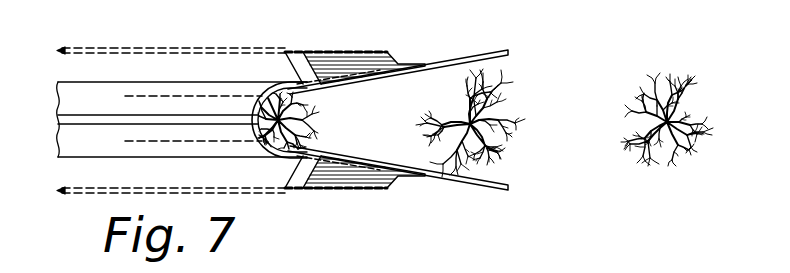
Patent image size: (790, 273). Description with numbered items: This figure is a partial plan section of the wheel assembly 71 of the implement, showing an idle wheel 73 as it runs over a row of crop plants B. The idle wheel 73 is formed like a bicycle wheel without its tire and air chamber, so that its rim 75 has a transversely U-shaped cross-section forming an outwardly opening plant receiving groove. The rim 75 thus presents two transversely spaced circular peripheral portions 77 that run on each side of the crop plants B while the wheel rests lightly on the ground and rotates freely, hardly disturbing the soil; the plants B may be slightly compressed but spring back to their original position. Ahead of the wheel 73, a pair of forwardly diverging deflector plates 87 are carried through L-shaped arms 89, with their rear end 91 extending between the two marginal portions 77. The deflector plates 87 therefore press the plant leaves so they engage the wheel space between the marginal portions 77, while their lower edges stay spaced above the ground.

The grasping instrument 71 is at (416, 208).
The idle wheel 73 is at (90, 137).
The rim 75 is at (67, 90).
The circular peripheral portions 77 is at (302, 83).
The deflector plates 87 is at (481, 51).
The L-shaped arms 89 is at (365, 51).
The rear end 91 is at (185, 93).
The crop plants B is at (320, 118).